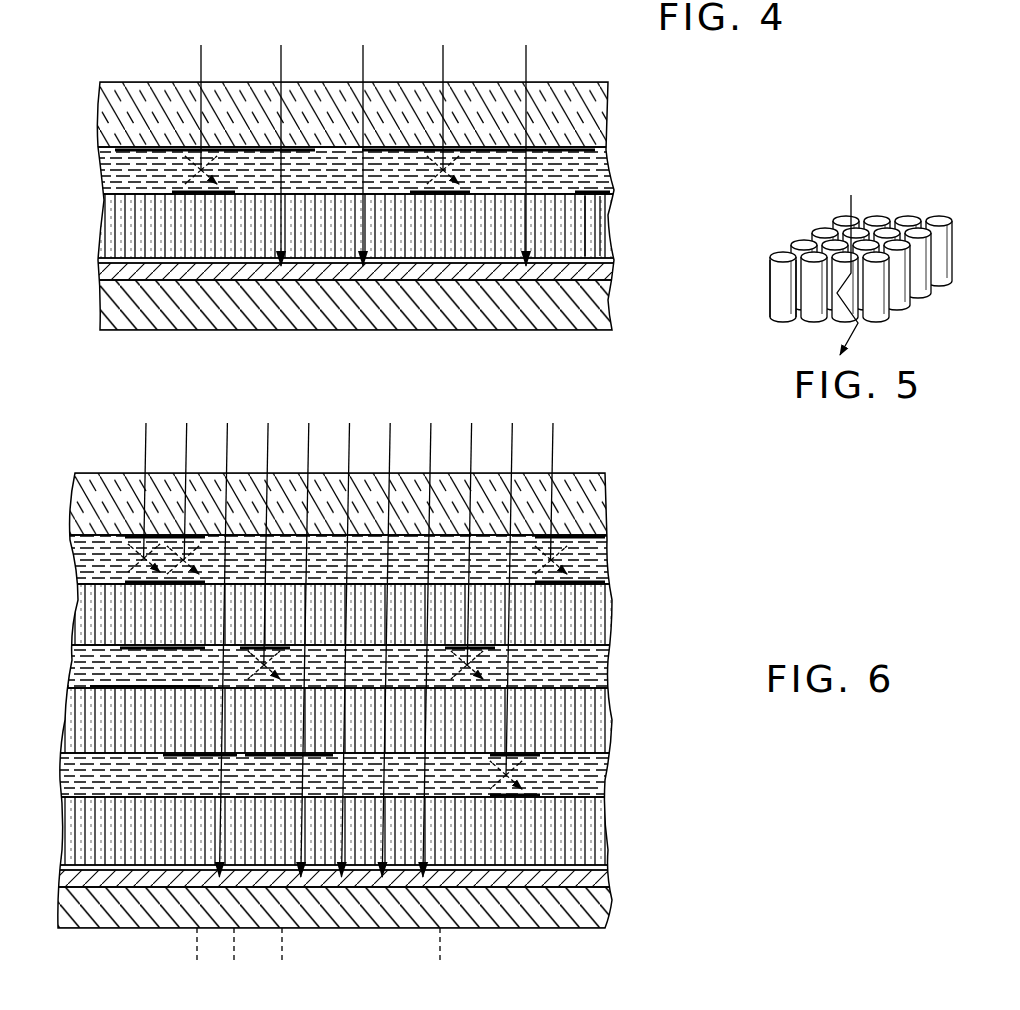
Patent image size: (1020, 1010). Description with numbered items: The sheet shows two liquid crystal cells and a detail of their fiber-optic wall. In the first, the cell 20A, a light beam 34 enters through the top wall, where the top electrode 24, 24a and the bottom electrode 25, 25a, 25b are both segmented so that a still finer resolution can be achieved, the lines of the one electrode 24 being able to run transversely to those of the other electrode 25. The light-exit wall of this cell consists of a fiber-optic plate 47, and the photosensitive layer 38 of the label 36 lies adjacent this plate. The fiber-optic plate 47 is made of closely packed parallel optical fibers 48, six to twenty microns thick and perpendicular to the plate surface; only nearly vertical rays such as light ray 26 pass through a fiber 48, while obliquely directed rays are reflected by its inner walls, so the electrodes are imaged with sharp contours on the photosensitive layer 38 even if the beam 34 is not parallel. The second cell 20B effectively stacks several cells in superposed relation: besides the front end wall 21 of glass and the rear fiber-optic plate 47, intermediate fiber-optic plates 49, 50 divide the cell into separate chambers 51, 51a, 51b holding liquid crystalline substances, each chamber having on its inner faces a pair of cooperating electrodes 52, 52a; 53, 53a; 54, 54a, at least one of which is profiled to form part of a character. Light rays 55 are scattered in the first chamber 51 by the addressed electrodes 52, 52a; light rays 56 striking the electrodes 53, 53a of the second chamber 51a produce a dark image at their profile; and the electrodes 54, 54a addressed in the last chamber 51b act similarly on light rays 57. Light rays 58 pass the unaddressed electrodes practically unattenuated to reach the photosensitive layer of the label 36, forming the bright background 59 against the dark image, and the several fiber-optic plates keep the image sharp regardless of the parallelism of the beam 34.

In FIG. 4, the liquid crystal cell 20A is at (622, 134).
In FIG. 6, the liquid crystal cell 20B is at (612, 516).
In FIG. 6, the front end wall 21 is at (582, 482).
In FIG. 4, the top electrode 24 is at (118, 148).
In FIG. 4, the top electrode 24a is at (470, 150).
In FIG. 4, the bottom electrode 25 is at (176, 190).
In FIG. 4, the bottom electrode 25a is at (416, 192).
In FIG. 4, the bottom electrode 25b is at (612, 185).
In FIG. 5, the light ray 26 is at (850, 261).
In FIG. 4, the light beam 34 is at (200, 45).
In FIG. 6, the light beam 34 is at (565, 427).
In FIG. 4, the label 36 is at (596, 312).
In FIG. 6, the label 36 is at (597, 908).
In FIG. 4, the photosensitive layer 38 is at (612, 272).
In FIG. 6, the photosensitive layer 38 is at (600, 880).
In FIG. 4, the fiber-optic plate 47 is at (566, 223).
In FIG. 5, the fiber-optic plate 47 is at (905, 228).
In FIG. 6, the fiber-optic plate 47 is at (593, 834).
In FIG. 4, the optical fibers 48 is at (585, 243).
In FIG. 5, the optical fibers 48 is at (812, 308).
In FIG. 6, the fiber-optic plate 49 is at (608, 618).
In FIG. 6, the fiber-optic plate 50 is at (590, 718).
In FIG. 6, the chamber 51 is at (608, 562).
In FIG. 6, the chamber 51a is at (608, 668).
In FIG. 6, the chamber 51b is at (590, 776).
In FIG. 6, the electrode 52 is at (128, 538).
In FIG. 6, the electrode 52a is at (127, 584).
In FIG. 6, the electrode 53 is at (128, 650).
In FIG. 6, the electrode 53a is at (105, 688).
In FIG. 6, the electrode 54 is at (590, 756).
In FIG. 6, the electrode 54a is at (590, 795).
In FIG. 6, the light rays 55 is at (186, 466).
In FIG. 6, the light rays 56 is at (267, 466).
In FIG. 6, the light rays 57 is at (511, 466).
In FIG. 6, the light rays 58 is at (226, 466).
In FIG. 6, the bright background 59 is at (440, 962).